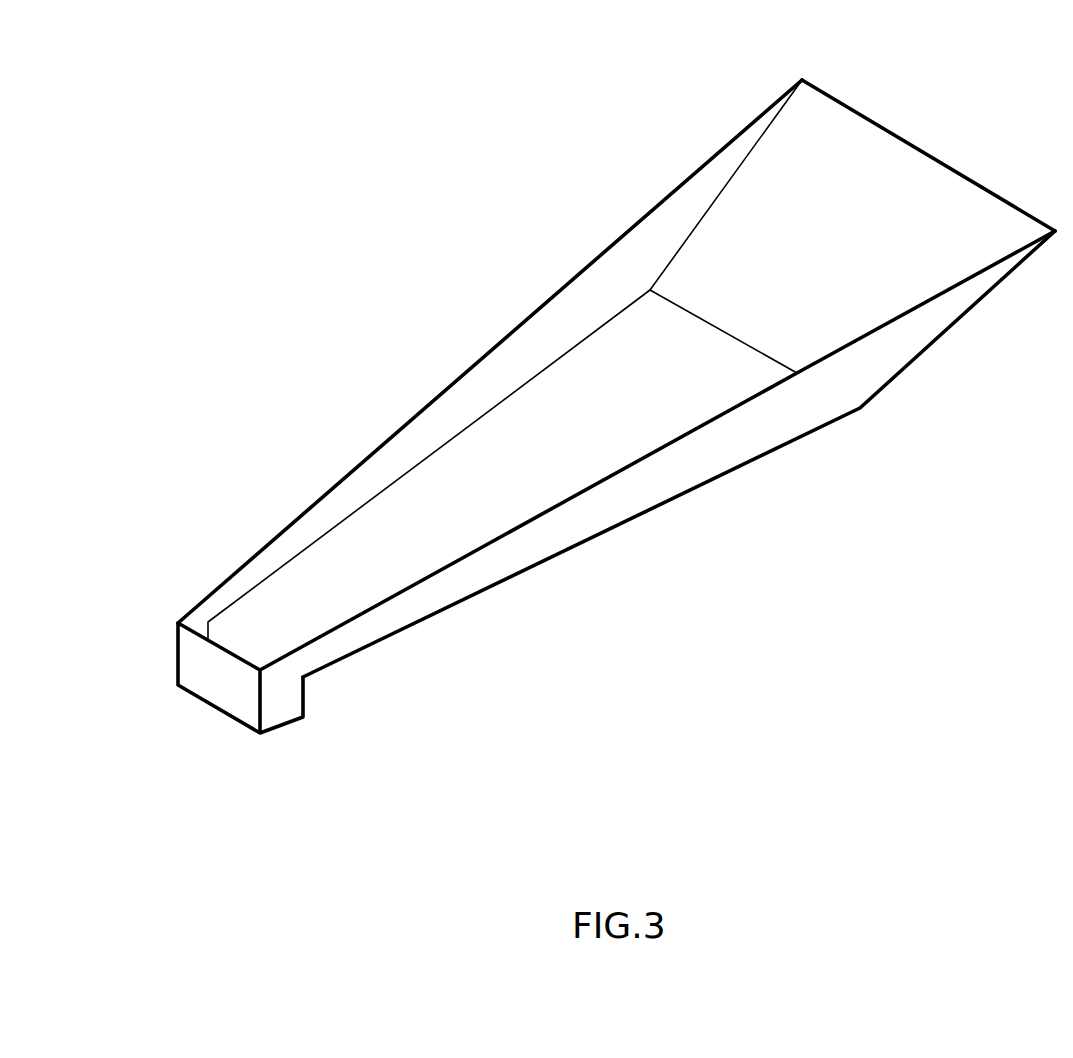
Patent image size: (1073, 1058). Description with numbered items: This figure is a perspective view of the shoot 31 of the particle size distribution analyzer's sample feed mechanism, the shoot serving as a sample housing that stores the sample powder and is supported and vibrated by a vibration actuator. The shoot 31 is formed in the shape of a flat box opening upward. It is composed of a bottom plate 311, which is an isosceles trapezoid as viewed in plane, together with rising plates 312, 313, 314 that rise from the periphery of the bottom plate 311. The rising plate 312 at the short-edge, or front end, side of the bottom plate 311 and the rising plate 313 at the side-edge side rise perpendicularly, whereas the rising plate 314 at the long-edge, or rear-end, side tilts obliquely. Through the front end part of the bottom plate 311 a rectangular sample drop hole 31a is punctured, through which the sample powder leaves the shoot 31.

The shoot 31 is at (690, 129).
The bottom plate 311 is at (622, 437).
The rising plate 312 is at (225, 700).
The rising plate 313 is at (482, 358).
The rising plate 314 is at (883, 125).
The sample drop hole 31a is at (237, 645).